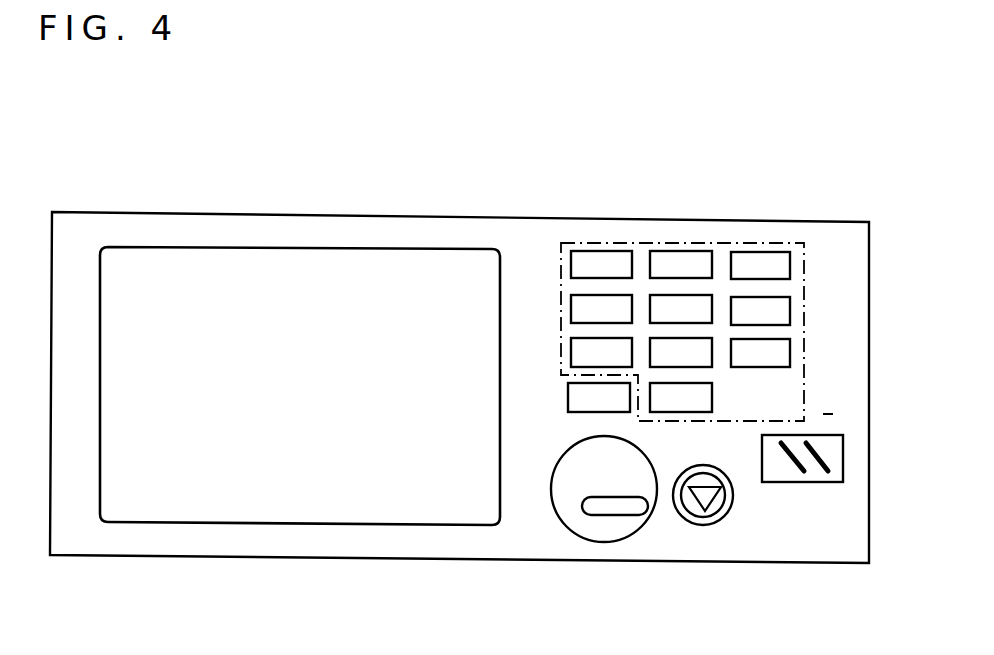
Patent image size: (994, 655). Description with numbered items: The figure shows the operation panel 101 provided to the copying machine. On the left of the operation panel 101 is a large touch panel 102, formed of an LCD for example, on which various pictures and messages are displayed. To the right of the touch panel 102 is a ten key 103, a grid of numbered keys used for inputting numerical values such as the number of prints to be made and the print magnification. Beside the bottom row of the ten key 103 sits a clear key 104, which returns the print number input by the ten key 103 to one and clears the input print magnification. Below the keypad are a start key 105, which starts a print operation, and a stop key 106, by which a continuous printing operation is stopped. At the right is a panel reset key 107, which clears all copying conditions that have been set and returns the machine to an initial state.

The operation panel 101 is at (188, 138).
The touch panel 102 is at (393, 275).
The ten key 103 is at (676, 243).
The clear key 104 is at (568, 397).
The start key 105 is at (603, 542).
The stop key 106 is at (703, 525).
The panel reset key 107 is at (800, 482).